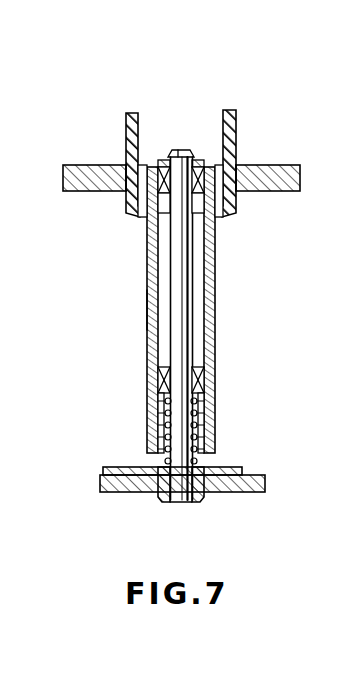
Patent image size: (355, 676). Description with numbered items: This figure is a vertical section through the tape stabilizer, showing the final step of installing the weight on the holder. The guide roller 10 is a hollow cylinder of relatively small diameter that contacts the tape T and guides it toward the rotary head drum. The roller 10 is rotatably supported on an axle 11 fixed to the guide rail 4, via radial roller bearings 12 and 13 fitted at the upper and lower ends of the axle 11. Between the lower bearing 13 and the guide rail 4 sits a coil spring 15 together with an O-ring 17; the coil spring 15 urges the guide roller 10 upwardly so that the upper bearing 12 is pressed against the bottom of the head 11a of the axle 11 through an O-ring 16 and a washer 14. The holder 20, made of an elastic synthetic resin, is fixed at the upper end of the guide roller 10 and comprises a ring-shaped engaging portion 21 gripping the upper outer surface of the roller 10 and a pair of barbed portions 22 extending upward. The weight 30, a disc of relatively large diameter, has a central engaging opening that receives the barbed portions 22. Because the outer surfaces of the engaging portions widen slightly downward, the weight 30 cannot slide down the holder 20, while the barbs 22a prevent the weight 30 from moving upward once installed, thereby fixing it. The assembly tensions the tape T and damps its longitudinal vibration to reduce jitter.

The guide rail 4 is at (263, 484).
The guide roller 10 is at (219, 278).
The axle 11 is at (194, 318).
The head of the axle 11a is at (178, 150).
The radial roller bearing 12 is at (220, 216).
The radial roller bearing 13 is at (206, 372).
The washer 14 is at (198, 158).
The coil spring 15 is at (165, 411).
The O-ring 16 is at (158, 160).
The O-ring 17 is at (206, 413).
The holder 20 is at (233, 106).
The engaging portion 21 is at (142, 213).
The barbed portion 22 is at (128, 157).
The barb 22a is at (127, 166).
The weight 30 is at (292, 166).
The tape T is at (147, 308).